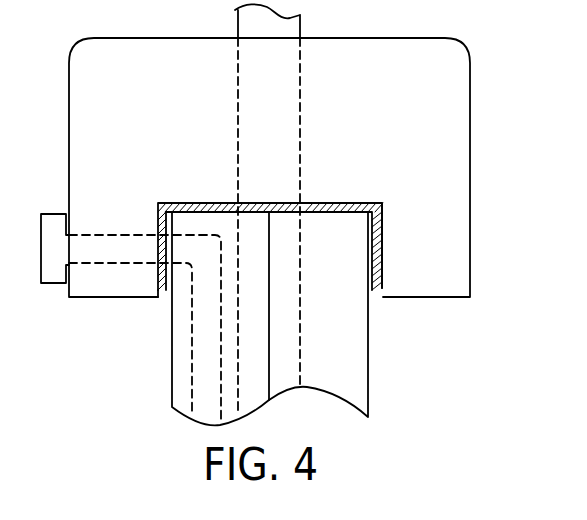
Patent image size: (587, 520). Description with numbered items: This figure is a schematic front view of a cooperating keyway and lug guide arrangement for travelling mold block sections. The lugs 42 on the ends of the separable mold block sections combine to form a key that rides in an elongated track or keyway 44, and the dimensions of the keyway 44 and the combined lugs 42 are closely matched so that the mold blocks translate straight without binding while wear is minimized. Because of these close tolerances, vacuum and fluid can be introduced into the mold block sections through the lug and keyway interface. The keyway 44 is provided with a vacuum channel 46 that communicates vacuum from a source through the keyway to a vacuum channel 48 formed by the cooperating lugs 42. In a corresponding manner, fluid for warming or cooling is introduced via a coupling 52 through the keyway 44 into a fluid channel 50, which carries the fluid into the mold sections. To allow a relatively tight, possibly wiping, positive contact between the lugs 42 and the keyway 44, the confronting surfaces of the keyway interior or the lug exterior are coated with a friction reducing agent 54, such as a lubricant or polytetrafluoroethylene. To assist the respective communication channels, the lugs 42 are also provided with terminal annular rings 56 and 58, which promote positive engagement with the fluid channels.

The lugs 42 is at (185, 357).
The keyway 44 is at (445, 123).
The vacuum channel 46 is at (282, 77).
The vacuum channel 48 is at (277, 267).
The fluid channel 50 is at (193, 237).
The coupling 52 is at (53, 213).
The friction reducing agent 54 is at (383, 250).
The terminal annular ring 56 is at (157, 245).
The terminal annular ring 58 is at (292, 200).